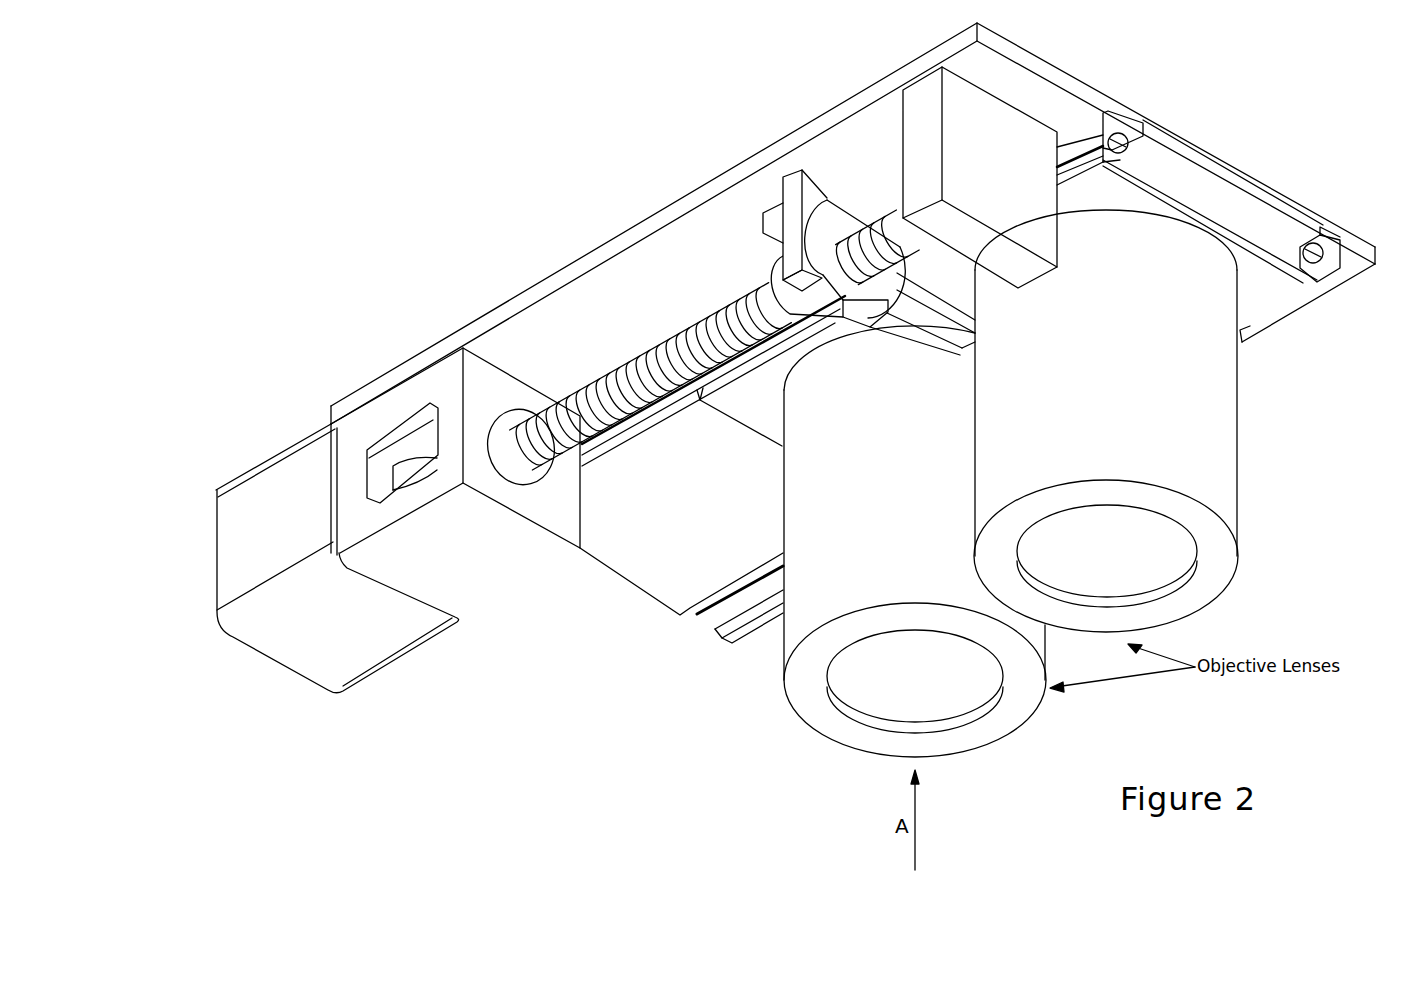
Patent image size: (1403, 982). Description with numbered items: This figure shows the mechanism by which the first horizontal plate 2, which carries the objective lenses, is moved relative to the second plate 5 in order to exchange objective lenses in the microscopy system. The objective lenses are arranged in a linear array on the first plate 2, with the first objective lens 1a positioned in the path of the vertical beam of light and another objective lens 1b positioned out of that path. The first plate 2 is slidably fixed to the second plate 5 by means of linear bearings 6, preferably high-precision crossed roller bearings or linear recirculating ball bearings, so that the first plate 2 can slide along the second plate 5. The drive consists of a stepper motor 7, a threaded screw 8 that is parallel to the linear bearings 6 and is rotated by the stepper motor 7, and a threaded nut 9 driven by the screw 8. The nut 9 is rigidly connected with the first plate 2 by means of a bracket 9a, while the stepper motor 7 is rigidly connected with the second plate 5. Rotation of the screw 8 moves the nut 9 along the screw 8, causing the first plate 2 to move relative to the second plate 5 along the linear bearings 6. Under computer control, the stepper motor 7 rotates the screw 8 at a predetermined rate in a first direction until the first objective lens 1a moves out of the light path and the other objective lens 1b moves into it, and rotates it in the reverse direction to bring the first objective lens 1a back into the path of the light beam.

The first objective lens 1a is at (802, 678).
The objective lens 1b is at (1217, 483).
The first horizontal plate 2 is at (1258, 298).
The second plate 5 is at (635, 570).
The linear bearings 6 is at (1122, 133).
The stepper motor 7 is at (293, 480).
The threaded screw 8 is at (620, 370).
The threaded nut 9 is at (843, 222).
The bracket 9a is at (787, 203).